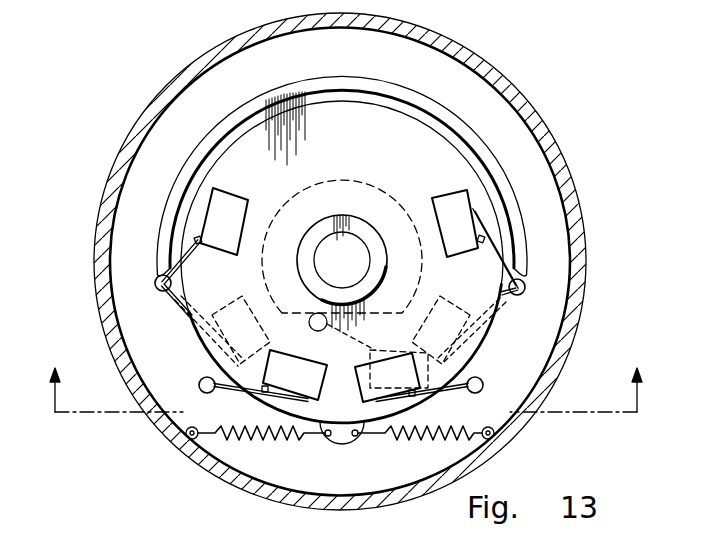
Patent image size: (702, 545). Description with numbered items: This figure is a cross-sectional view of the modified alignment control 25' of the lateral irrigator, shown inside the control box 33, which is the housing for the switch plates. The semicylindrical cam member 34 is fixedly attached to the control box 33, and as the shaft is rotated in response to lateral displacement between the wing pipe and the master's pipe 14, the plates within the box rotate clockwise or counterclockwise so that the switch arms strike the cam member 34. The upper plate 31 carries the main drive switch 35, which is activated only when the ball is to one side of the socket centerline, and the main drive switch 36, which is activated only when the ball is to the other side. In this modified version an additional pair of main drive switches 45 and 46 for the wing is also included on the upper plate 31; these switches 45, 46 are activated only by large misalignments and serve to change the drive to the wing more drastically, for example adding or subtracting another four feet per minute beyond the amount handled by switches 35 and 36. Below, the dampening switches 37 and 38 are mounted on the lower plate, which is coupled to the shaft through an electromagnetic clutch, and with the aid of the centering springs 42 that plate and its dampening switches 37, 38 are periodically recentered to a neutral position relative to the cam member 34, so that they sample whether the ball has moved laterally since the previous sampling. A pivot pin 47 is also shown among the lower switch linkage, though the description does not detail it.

The modified alignment control 25' is at (218, 138).
The control box 33 is at (498, 74).
The semicylindrical cam member 34 is at (342, 162).
The upper plate 31 is at (358, 146).
The main drive switch 36 is at (222, 202).
The main drive switch 35 is at (447, 200).
The dampening switch 38 is at (204, 358).
The additional main drive switch 46 is at (306, 362).
The additional main drive switch 45 is at (362, 367).
The dampening switch 37 is at (472, 346).
The pivot pin 47 is at (481, 380).
The centering springs 42 is at (272, 432).
The pipe 14 is at (347, 380).